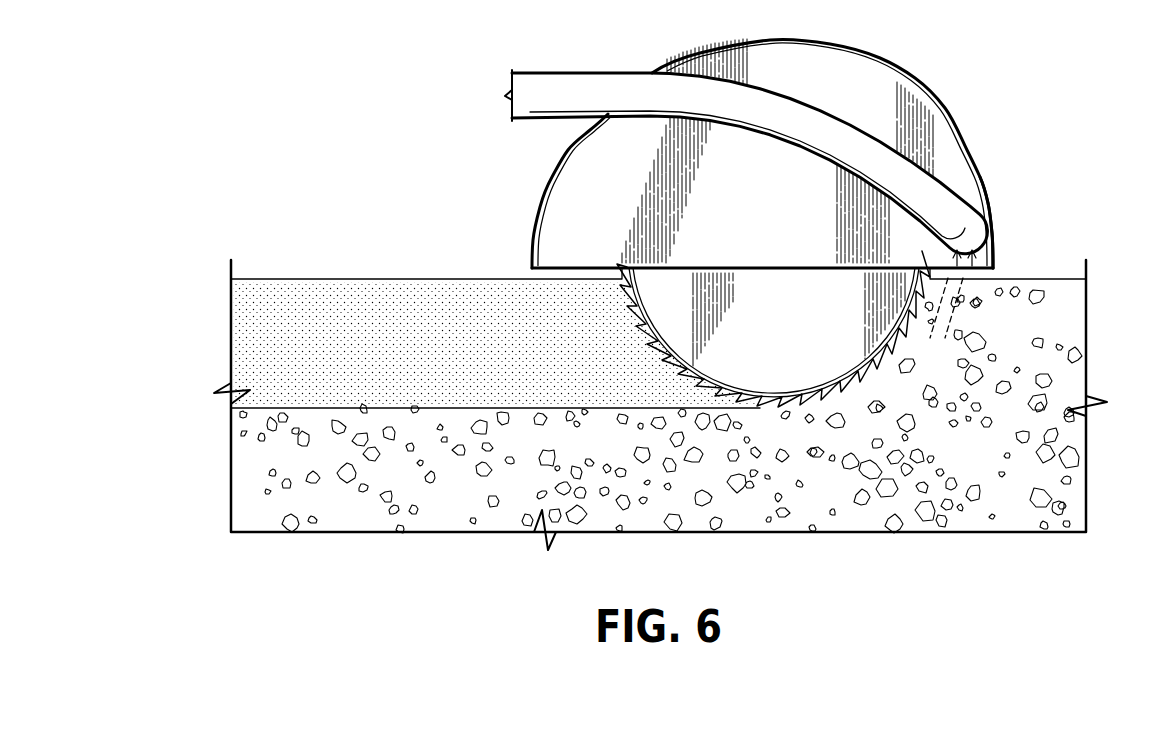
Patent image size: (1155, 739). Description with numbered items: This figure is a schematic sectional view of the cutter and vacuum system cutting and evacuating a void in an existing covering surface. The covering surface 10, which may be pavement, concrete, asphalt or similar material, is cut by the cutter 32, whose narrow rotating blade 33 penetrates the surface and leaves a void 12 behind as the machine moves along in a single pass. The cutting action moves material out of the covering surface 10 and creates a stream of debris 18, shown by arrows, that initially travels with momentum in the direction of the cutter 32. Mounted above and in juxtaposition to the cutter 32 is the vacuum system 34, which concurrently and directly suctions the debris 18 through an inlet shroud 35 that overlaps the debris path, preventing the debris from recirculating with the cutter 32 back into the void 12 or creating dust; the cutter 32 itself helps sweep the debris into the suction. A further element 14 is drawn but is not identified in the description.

The existing covering surface 10 is at (1052, 279).
The void 12 is at (548, 362).
The debris 14 is at (953, 292).
The stream of debris 18 is at (998, 276).
The cutter 32 is at (800, 238).
The rotating blade 33 is at (773, 329).
The vacuum system 34 is at (962, 232).
The inlet shroud 35 is at (995, 247).